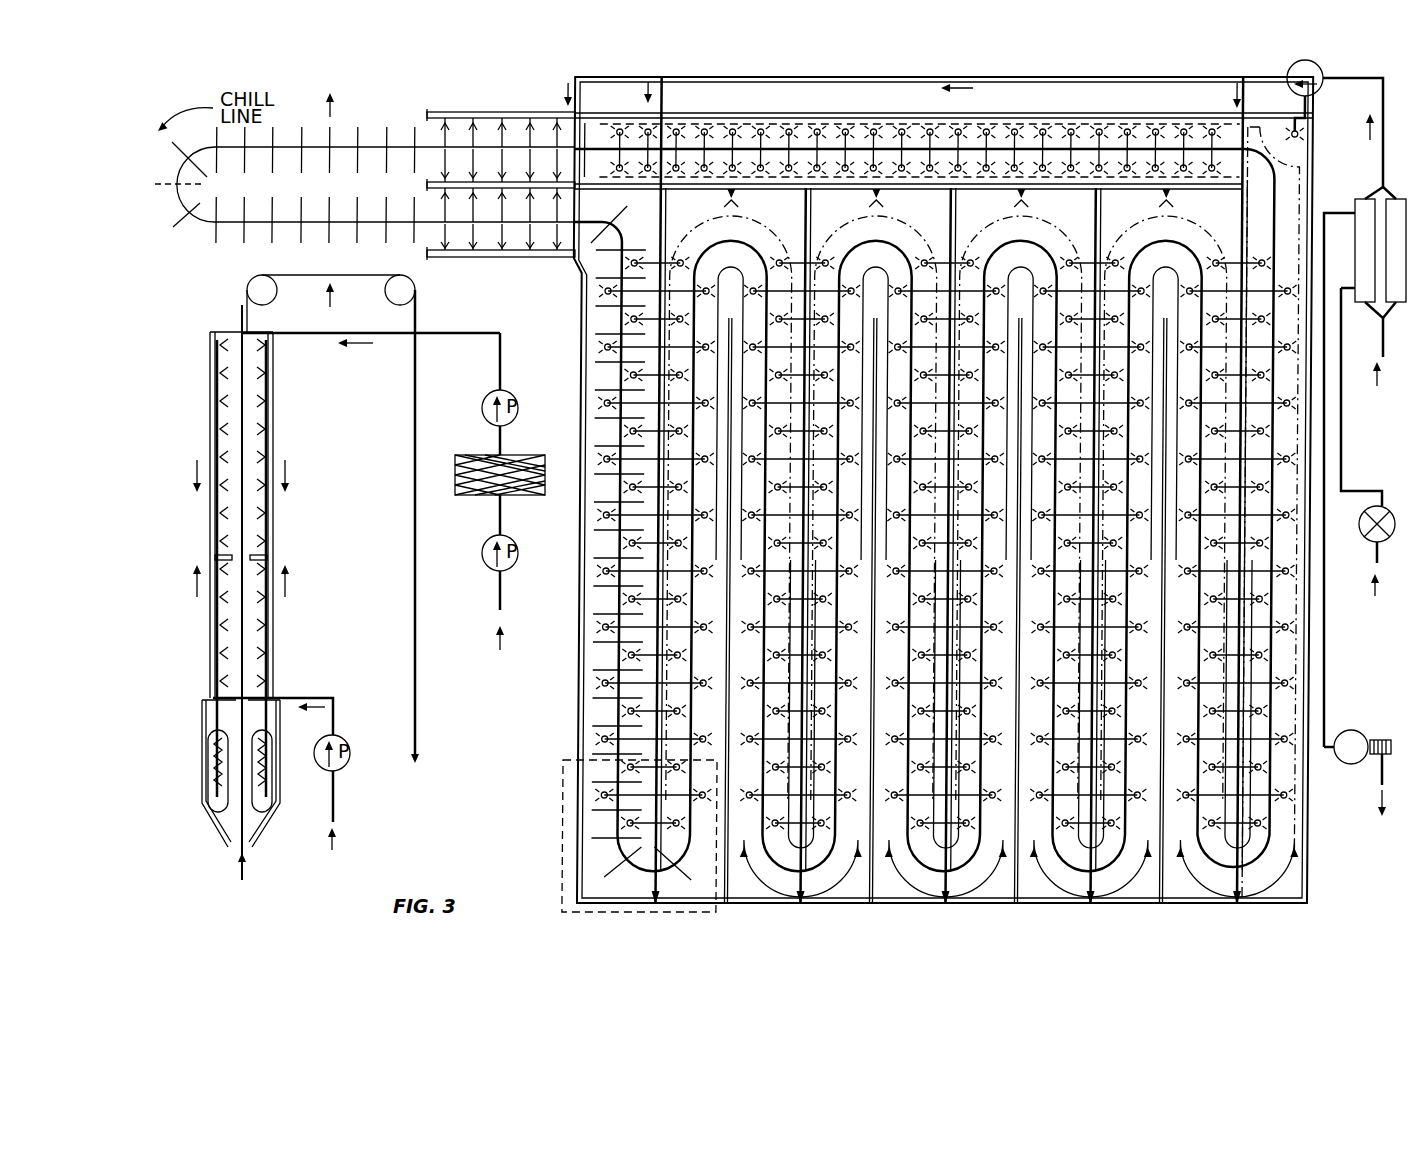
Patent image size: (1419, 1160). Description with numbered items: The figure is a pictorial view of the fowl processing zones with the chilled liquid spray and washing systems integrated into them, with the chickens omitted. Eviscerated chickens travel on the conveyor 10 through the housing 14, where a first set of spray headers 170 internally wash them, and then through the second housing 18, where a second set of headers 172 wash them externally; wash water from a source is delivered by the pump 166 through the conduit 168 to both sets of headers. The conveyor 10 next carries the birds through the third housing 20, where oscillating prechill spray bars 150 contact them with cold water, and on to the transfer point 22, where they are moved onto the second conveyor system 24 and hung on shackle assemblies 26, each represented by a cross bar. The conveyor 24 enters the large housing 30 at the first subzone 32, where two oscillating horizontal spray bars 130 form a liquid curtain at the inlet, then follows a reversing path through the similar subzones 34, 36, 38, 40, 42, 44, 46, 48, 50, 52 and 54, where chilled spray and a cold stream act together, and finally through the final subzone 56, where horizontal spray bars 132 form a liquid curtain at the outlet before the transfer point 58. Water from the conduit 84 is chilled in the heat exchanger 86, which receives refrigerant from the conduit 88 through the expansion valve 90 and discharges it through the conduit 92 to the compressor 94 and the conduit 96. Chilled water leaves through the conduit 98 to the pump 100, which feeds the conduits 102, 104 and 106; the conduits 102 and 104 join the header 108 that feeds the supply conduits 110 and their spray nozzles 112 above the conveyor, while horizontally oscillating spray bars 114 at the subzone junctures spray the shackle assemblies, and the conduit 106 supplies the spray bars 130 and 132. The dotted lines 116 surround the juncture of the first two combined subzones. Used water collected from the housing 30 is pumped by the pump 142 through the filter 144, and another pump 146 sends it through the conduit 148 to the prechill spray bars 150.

The conveyor 10 is at (243, 527).
The housing 14 is at (203, 726).
The second housing 18 is at (210, 657).
The third housing 20 is at (210, 392).
The transfer point 22 is at (323, 268).
The second conveyor system 24 is at (207, 197).
The shackle assemblies 26 is at (247, 233).
The housing 30 is at (527, 116).
The first subzone 32 is at (461, 242).
The subzone 34 is at (596, 864).
The subzone 36 is at (706, 870).
The subzone 38 is at (752, 860).
The subzone 40 is at (861, 860).
The subzone 42 is at (892, 860).
The subzone 44 is at (1007, 860).
The subzone 46 is at (1040, 860).
The subzone 48 is at (1152, 860).
The subzone 50 is at (1185, 860).
The subzone 52 is at (1299, 860).
The subzone 54 is at (829, 128).
The final subzone 56 is at (433, 133).
The transfer point 58 is at (335, 112).
The conduit 84 is at (1381, 352).
The heat exchanger 86 is at (1398, 320).
The conduit 88 is at (1375, 556).
The expansion valve 90 is at (1380, 506).
The conduit 92 is at (1337, 213).
The compressor 94 is at (1368, 735).
The conduit 96 is at (1378, 790).
The conduit 98 is at (1383, 156).
The pump 100 is at (1287, 70).
The conduit 102 is at (1250, 103).
The conduit 104 is at (665, 95).
The conduit 106 is at (578, 94).
The header 108 is at (920, 190).
The supply conduits 110 is at (665, 228).
The spray nozzles 112 is at (636, 258).
The oscillating spray bars 114 is at (1300, 135).
The dotted lines 116 is at (568, 770).
The oscillating horizontal spray bars 130 is at (430, 253).
The horizontal spray bars 132 is at (436, 112).
The pump 142 is at (484, 546).
The filter 144 is at (480, 457).
The pump 146 is at (494, 392).
The conduit 148 is at (392, 334).
The prechill spray bars 150 is at (212, 356).
The pump 166 is at (350, 746).
The conduit 168 is at (335, 699).
The spray headers 170 is at (215, 795).
The headers 172 is at (212, 680).